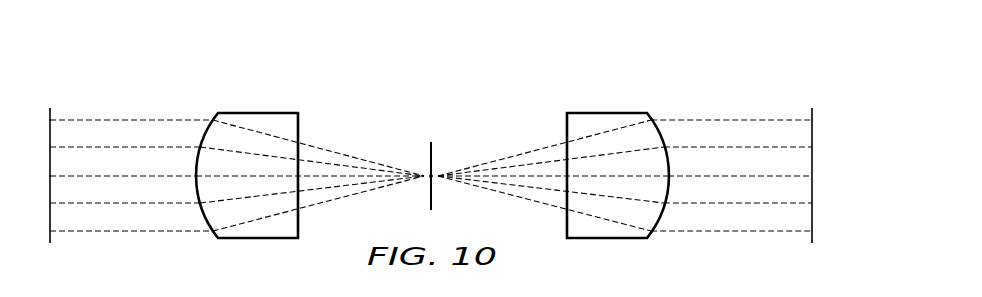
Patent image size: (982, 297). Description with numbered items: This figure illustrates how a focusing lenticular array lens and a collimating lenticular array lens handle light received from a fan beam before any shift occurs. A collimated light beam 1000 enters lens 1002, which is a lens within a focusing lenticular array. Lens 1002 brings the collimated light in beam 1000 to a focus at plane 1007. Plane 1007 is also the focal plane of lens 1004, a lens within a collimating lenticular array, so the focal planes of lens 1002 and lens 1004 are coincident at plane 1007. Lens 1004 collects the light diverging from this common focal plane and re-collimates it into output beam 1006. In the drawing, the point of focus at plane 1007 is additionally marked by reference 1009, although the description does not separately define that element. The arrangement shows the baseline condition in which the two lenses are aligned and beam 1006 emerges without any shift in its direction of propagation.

The beam 1000 is at (115, 120).
The lens 1002 is at (258, 113).
The lens 1004 is at (603, 113).
The beam 1006 is at (812, 133).
The plane 1007 is at (429, 162).
The focal point (pinhole opening) 1009 is at (436, 174).